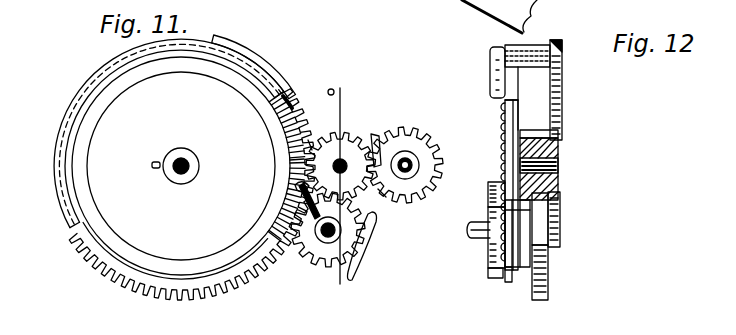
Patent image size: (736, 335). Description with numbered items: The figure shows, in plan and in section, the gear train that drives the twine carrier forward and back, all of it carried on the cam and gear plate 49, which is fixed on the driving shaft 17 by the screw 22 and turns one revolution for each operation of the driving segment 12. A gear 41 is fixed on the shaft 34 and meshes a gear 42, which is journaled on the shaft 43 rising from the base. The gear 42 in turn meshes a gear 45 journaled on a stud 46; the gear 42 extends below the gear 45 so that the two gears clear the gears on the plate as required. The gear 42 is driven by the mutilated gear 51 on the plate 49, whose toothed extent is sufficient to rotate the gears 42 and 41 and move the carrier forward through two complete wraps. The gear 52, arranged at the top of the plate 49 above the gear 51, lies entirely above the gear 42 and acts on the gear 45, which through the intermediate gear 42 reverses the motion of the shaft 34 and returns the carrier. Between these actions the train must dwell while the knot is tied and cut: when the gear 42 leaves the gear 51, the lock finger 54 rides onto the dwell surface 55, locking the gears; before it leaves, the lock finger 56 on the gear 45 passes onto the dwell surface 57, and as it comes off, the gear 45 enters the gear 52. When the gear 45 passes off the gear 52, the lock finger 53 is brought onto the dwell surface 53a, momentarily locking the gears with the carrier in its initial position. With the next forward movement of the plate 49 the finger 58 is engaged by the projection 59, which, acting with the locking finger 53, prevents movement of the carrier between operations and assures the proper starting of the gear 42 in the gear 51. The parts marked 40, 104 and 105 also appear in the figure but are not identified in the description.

In FIG. 11, the gear segment 12 is at (334, 92).
In FIG. 11, the driving shaft 17 is at (186, 163).
In FIG. 11, the screw 22 is at (157, 170).
In FIG. 11, the shaft 34 is at (412, 157).
In FIG. 12, the drum body 40 is at (560, 180).
In FIG. 11, the gear 41 is at (442, 165).
In FIG. 11, the gear 42 is at (347, 162).
In FIG. 12, the gear 42 is at (548, 198).
In FIG. 11, the shaft 43 is at (380, 136).
In FIG. 12, the shaft 43 is at (559, 163).
In FIG. 11, the gear 45 is at (308, 262).
In FIG. 12, the gear 45 is at (520, 270).
In FIG. 11, the stud 46 is at (338, 236).
In FIG. 12, the stud 46 is at (474, 237).
In FIG. 11, the cam and gear plate 49 is at (181, 166).
In FIG. 11, the gear 51 is at (180, 303).
In FIG. 11, the gear 52 is at (293, 96).
In FIG. 12, the gear 52 is at (503, 131).
In FIG. 11, the lock finger 53 is at (304, 136).
In FIG. 12, the dwell surface 53a is at (549, 127).
In FIG. 11, the lock finger 54 is at (385, 196).
In FIG. 11, the dwell surface 55 is at (68, 226).
In FIG. 12, the dwell surface 55 is at (553, 67).
In FIG. 11, the lock finger 56 is at (366, 226).
In FIG. 12, the lock finger 56 is at (489, 269).
In FIG. 11, the dwell surface 57 is at (246, 52).
In FIG. 12, the dwell surface 57 is at (490, 70).
In FIG. 11, the finger 58 is at (299, 238).
In FIG. 12, the finger 58 is at (489, 205).
In FIG. 11, the projection 59 is at (290, 170).
In FIG. 12, the projection 59 is at (489, 185).
In FIG. 11, the toothed sector 104 is at (258, 113).
In FIG. 12, the toothed sector 104 is at (500, 118).
In FIG. 11, the rim 105 is at (181, 169).